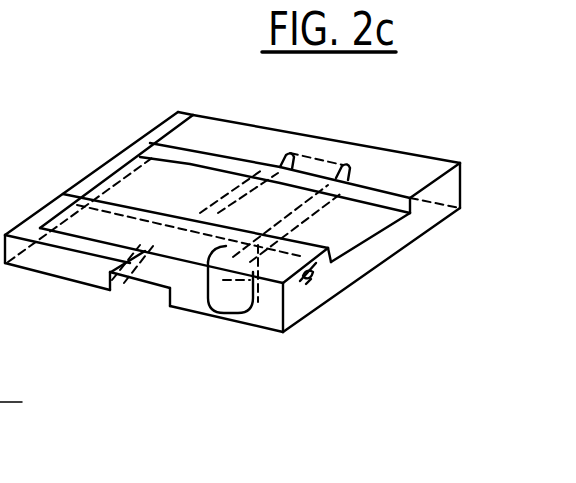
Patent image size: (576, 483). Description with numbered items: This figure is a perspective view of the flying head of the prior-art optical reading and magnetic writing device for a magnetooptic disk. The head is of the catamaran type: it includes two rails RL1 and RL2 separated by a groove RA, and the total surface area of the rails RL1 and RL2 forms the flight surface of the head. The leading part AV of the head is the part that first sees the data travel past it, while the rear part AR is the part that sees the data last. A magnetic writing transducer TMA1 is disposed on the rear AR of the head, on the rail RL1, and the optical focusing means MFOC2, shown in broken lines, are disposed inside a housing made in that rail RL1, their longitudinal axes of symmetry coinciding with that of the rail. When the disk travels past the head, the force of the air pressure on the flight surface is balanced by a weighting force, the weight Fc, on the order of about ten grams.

The leading part AV is at (82, 175).
The rear part AR is at (408, 231).
The groove RA is at (122, 168).
The first rail RL1 is at (75, 262).
The second rail RL2 is at (305, 132).
The weight Fc is at (143, 293).
The multi-fiber optical connector MFOC2 is at (223, 266).
The locking tab TMA1 is at (307, 274).